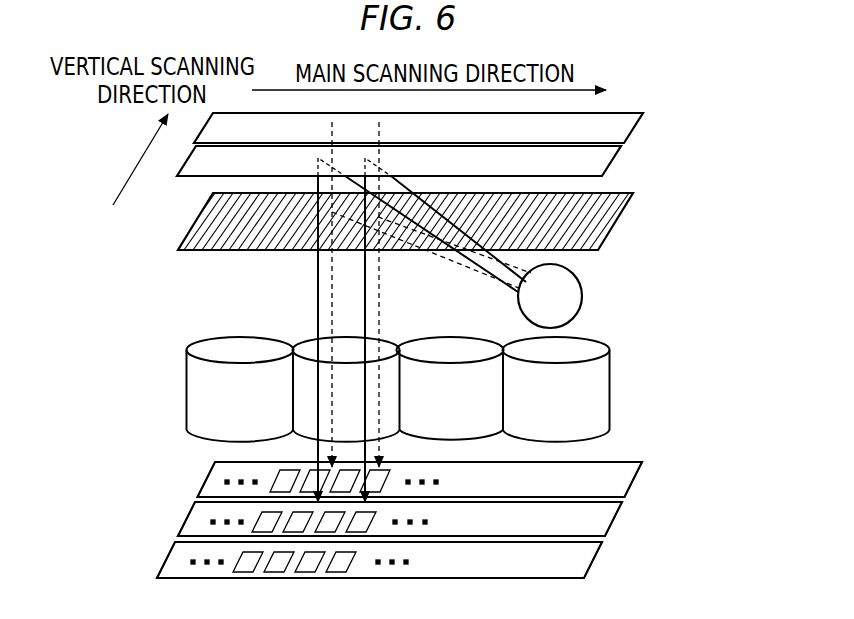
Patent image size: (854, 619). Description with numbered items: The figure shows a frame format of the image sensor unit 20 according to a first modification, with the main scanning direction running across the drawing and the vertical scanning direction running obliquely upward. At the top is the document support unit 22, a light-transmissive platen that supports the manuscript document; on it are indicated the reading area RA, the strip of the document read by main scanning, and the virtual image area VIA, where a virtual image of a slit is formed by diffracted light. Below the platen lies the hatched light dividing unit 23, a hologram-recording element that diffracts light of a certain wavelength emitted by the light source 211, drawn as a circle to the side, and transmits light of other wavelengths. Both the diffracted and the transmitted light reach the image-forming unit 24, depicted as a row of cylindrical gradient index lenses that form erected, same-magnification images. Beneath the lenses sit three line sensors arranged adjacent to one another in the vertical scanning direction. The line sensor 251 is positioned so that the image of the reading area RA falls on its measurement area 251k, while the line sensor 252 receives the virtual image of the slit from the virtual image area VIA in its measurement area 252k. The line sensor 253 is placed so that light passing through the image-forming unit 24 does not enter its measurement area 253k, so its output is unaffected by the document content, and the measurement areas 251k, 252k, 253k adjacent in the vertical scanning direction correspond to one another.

The virtual image area VIA is at (613, 130).
The reading area RA is at (600, 162).
The light dividing unit 23 is at (605, 220).
The document support unit 22 is at (456, 181).
The light source 211 is at (582, 295).
The image-forming unit 24 is at (200, 388).
The image sensor unit 20 is at (432, 514).
The line sensor 252 is at (415, 474).
The line sensor 251 is at (400, 516).
The line sensor 253 is at (383, 558).
The measurement area 252k is at (280, 480).
The measurement area 251k is at (265, 522).
The measurement area 253k is at (245, 560).